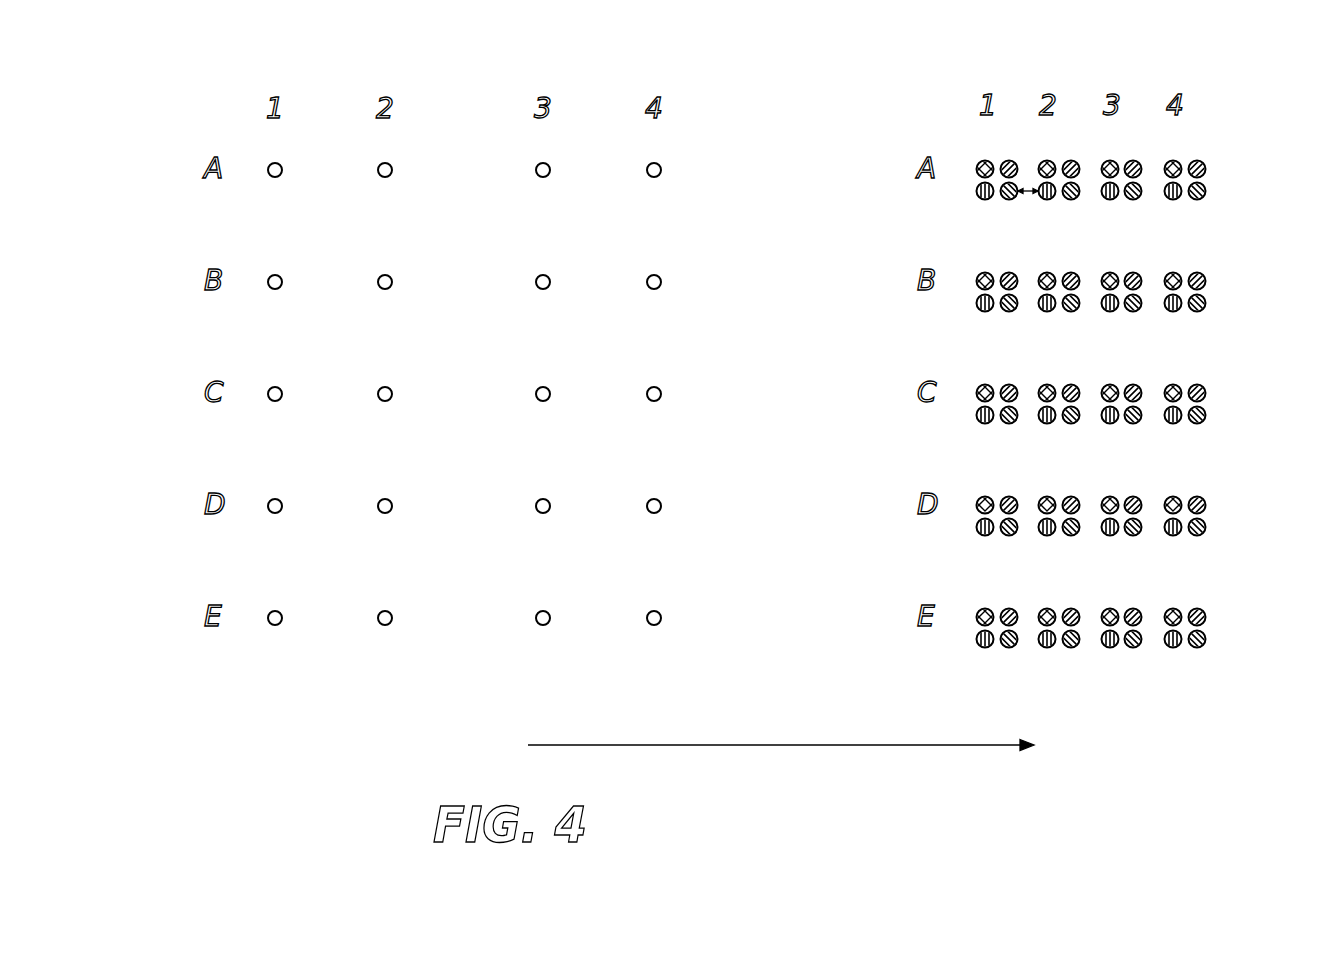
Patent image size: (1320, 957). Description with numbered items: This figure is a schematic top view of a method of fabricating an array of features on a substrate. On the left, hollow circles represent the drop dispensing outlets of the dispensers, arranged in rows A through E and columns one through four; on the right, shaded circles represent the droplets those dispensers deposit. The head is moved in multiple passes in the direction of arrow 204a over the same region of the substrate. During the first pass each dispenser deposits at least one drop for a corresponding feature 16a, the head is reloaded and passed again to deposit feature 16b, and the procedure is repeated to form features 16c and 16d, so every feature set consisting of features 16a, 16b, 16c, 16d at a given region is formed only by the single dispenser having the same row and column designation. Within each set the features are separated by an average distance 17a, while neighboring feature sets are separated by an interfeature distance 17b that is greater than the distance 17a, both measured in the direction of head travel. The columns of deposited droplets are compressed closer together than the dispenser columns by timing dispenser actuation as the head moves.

The feature 16a is at (985, 160).
The feature 16b is at (1009, 160).
The feature 16c is at (978, 193).
The feature 16d is at (1008, 200).
The average distance between features 17a is at (1060, 167).
The interfeature distance between feature sets 17b is at (1027, 197).
The arrow 204a is at (802, 745).